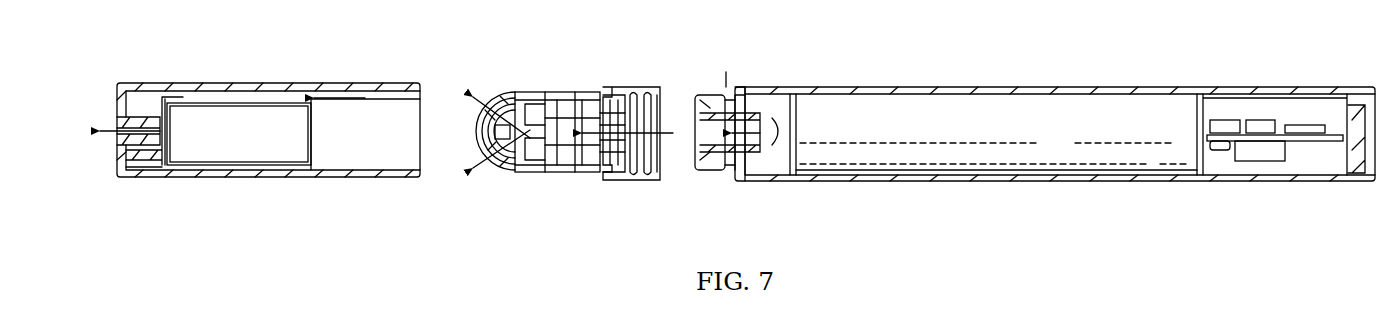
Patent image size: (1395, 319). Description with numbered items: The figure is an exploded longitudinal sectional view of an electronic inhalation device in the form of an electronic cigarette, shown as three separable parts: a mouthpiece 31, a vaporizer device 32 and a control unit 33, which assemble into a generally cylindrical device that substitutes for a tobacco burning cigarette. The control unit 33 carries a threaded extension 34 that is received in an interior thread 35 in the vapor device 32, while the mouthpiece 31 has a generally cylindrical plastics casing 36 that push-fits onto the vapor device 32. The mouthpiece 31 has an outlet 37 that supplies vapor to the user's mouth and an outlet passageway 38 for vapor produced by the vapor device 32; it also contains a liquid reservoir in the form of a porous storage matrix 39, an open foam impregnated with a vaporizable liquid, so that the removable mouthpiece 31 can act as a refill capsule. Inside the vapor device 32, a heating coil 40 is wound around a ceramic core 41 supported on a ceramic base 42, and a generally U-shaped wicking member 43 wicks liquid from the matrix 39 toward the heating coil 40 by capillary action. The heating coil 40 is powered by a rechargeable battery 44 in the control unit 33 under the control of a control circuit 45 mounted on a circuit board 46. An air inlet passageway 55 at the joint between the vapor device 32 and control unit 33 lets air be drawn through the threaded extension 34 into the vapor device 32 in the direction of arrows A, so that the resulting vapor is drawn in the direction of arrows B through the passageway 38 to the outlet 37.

The mouthpiece 31 is at (263, 83).
The vaporizer device 32 is at (578, 92).
The control unit 33 is at (1013, 94).
The threaded extension 34 is at (707, 172).
The interior thread 35 is at (643, 180).
The plastics casing 36 is at (328, 84).
The outlet 37 is at (117, 124).
The outlet passageway 38 is at (213, 95).
The porous storage matrix 39 is at (245, 153).
The heating coil 40 is at (537, 172).
The ceramic core 41 is at (532, 97).
The ceramic base 42 is at (576, 174).
The U-shaped wicking member 43 is at (480, 145).
The rechargeable battery 44 is at (1052, 172).
The control circuit 45 is at (1313, 142).
The circuit board 46 is at (1281, 125).
The air inlet passageway 55 is at (772, 97).
The arrows A is at (773, 147).
The arrows B is at (505, 95).